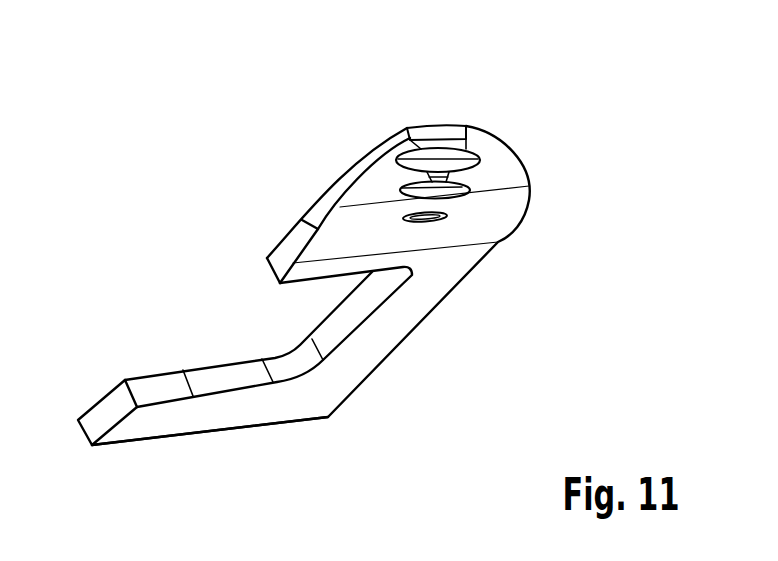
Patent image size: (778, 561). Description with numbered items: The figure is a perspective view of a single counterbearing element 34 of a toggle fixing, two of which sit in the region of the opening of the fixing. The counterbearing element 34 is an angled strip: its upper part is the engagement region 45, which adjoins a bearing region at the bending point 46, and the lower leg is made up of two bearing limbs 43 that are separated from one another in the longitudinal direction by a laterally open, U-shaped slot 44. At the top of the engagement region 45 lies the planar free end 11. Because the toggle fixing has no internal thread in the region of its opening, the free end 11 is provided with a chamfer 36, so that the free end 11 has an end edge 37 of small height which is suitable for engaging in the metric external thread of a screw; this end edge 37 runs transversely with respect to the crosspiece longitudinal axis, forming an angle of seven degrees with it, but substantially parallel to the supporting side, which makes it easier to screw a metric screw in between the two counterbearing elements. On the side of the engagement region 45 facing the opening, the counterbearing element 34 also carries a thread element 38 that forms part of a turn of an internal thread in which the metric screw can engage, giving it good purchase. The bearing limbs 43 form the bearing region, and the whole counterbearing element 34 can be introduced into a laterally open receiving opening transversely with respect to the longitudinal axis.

The free end 11 is at (428, 108).
The counterbearing element 34 is at (146, 233).
The chamfer 36 is at (438, 126).
The end edge 37 is at (462, 136).
The thread element 38 is at (445, 187).
The bearing limb 43 is at (275, 266).
The slot 44 is at (203, 312).
The engagement region 45 is at (333, 196).
The bending point 46 is at (315, 229).